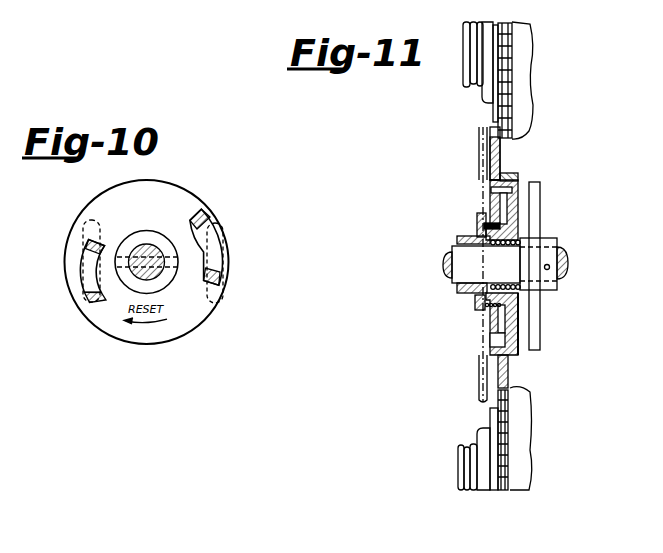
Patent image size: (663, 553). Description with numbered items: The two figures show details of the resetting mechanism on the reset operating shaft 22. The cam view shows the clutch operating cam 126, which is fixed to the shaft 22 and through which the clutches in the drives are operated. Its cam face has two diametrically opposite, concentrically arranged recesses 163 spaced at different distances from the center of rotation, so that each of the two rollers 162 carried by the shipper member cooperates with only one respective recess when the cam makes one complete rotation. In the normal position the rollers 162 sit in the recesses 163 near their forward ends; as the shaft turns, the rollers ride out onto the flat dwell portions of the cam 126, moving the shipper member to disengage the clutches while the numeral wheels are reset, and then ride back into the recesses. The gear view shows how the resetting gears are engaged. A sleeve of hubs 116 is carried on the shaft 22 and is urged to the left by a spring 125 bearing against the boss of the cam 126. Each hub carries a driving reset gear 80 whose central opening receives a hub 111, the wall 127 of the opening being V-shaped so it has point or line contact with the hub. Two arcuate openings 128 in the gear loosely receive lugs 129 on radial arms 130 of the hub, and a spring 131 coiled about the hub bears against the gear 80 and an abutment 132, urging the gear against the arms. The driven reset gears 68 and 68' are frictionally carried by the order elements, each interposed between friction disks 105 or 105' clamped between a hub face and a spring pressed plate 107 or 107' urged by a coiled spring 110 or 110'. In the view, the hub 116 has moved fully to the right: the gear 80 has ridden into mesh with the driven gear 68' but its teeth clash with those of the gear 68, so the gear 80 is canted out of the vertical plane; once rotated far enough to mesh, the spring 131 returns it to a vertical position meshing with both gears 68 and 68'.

In FIG. 10, the reset operating shaft 22 is at (142, 244).
In FIG. 11, the reset operating shaft 22 is at (453, 256).
In FIG. 11, the driven reset gear 68 is at (538, 80).
In FIG. 11, the driven reset gear 68' is at (536, 438).
In FIG. 11, the driving reset gear 80 is at (497, 155).
In FIG. 11, the friction disk 105 is at (535, 80).
In FIG. 11, the friction disk 105' is at (534, 440).
In FIG. 11, the spring pressed plate 107 is at (468, 72).
In FIG. 11, the spring pressed plate 107' is at (482, 463).
In FIG. 11, the coiled spring 110 is at (453, 55).
In FIG. 11, the coiled spring 110' is at (453, 452).
In FIG. 11, the hub 111 is at (512, 231).
In FIG. 11, the hub 116 is at (476, 237).
In FIG. 11, the spring 125 is at (519, 239).
In FIG. 10, the clutch operating cam 126 is at (183, 192).
In FIG. 11, the clutch operating cam 126 is at (537, 338).
In FIG. 11, the wall 127 is at (497, 327).
In FIG. 11, the arcuate opening 128 is at (504, 176).
In FIG. 11, the lug 129 is at (490, 182).
In FIG. 11, the radial arm 130 is at (513, 312).
In FIG. 11, the spring 131 is at (491, 309).
In FIG. 11, the abutment 132 is at (477, 306).
In FIG. 10, the roller 162 is at (87, 221).
In FIG. 10, the recess 163 is at (88, 264).